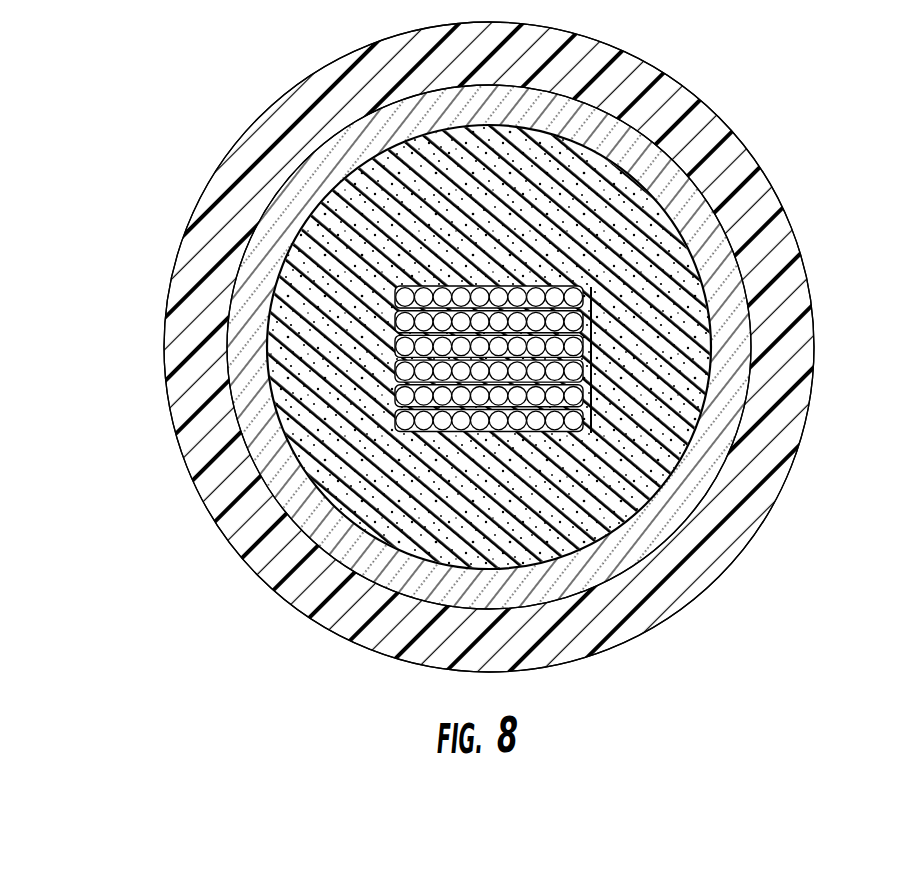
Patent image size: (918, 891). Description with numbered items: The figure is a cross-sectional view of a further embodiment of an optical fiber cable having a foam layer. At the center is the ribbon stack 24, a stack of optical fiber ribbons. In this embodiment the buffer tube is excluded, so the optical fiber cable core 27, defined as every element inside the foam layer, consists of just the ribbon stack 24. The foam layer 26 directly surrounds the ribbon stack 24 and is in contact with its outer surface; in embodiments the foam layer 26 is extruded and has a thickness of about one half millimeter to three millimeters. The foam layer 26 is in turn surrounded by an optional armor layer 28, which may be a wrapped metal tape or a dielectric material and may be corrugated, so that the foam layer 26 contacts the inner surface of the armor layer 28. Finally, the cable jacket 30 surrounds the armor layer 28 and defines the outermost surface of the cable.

The ribbon stack 24 is at (595, 357).
The foam layer 26 is at (628, 170).
The optical fiber cable core 27 is at (600, 465).
The armor layer 28 is at (332, 175).
The cable jacket 30 is at (187, 403).